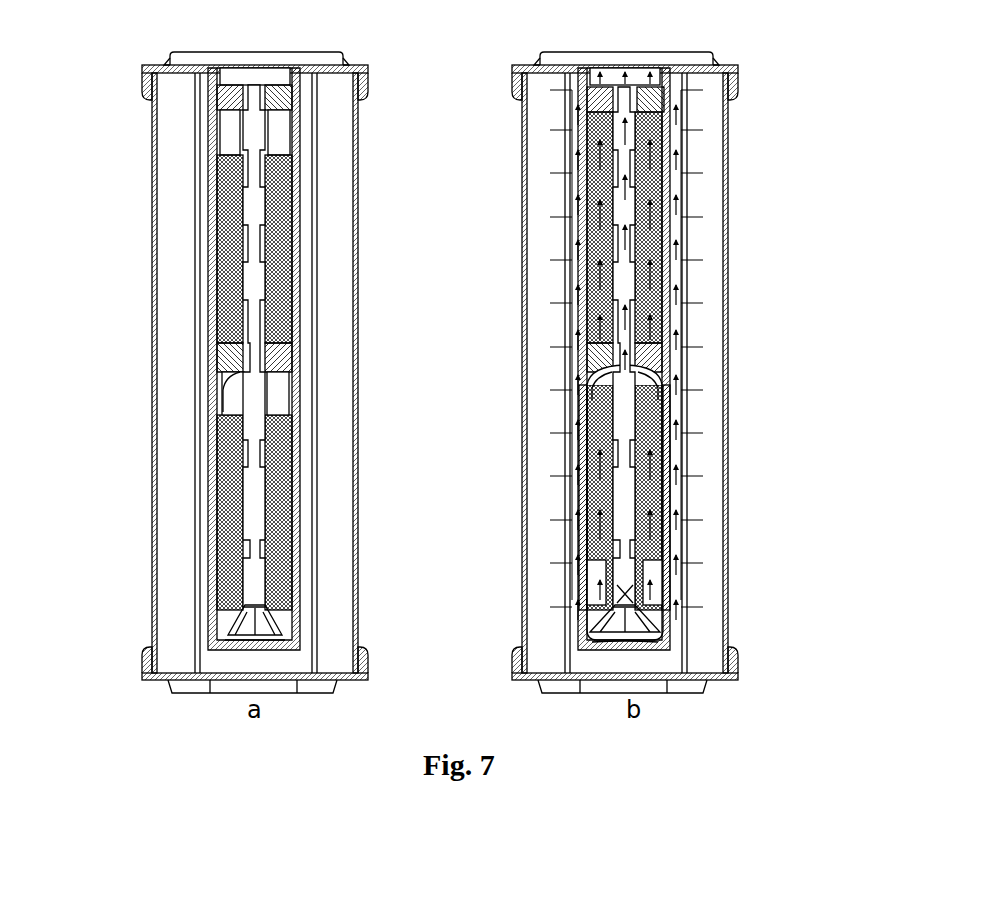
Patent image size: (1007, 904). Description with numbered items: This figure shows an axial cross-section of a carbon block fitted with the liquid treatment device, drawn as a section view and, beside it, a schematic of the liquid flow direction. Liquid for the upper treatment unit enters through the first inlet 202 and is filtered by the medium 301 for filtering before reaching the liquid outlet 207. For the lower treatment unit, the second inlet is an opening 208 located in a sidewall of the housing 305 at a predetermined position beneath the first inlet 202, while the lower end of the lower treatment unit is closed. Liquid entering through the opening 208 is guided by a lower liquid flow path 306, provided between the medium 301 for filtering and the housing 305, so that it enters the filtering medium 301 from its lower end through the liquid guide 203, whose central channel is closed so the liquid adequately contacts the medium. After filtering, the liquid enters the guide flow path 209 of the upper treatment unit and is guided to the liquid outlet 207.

The liquid outlet 207 is at (250, 80).
The medium for filtering 301 is at (230, 272).
The guide flow path 209 is at (257, 313).
The first inlet 202 is at (212, 353).
The opening 208 is at (215, 378).
The housing 305 is at (670, 530).
The lower liquid flow path 306 is at (665, 577).
The liquid guide 203 is at (657, 622).